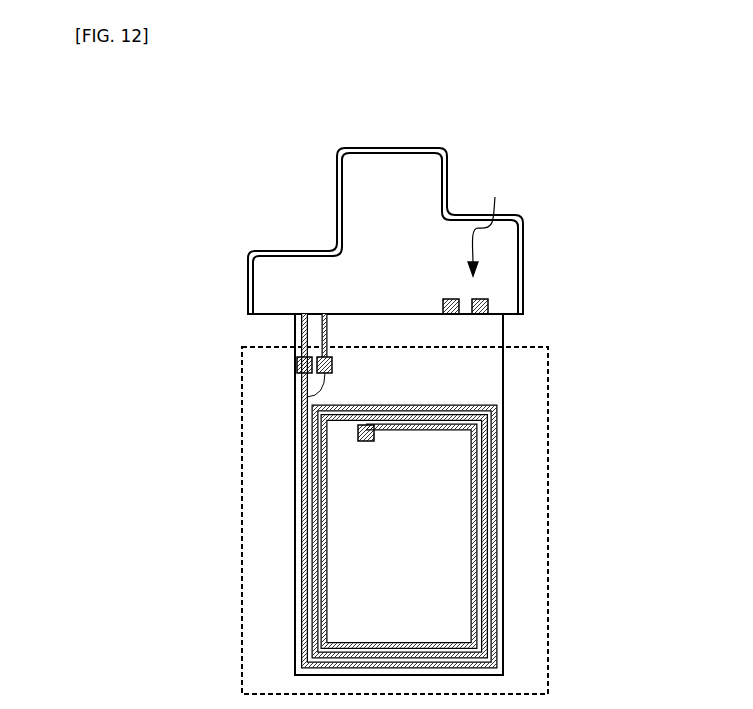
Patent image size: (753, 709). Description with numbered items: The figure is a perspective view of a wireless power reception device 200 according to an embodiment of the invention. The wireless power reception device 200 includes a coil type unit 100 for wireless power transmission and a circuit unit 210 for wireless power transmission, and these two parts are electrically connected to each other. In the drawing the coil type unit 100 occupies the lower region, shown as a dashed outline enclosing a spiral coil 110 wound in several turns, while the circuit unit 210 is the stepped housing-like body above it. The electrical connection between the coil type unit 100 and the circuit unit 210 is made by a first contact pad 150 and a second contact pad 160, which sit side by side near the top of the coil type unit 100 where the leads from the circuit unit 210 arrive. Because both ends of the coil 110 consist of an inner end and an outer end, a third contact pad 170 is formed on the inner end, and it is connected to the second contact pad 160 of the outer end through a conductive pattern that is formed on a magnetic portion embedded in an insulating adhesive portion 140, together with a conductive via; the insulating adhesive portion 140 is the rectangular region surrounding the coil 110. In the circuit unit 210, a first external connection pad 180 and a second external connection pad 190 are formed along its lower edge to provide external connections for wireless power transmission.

The coil type unit 100 is at (549, 487).
The coil 110 is at (497, 586).
The insulating adhesive portion 140 is at (490, 378).
The first contact pad 150 is at (297, 369).
The second contact pad 160 is at (305, 397).
The third contact pad 170 is at (358, 440).
The first external connection pad 180 is at (447, 299).
The second external connection pad 190 is at (485, 302).
The wireless power reception device 200 is at (122, 126).
The circuit unit 210 is at (492, 221).